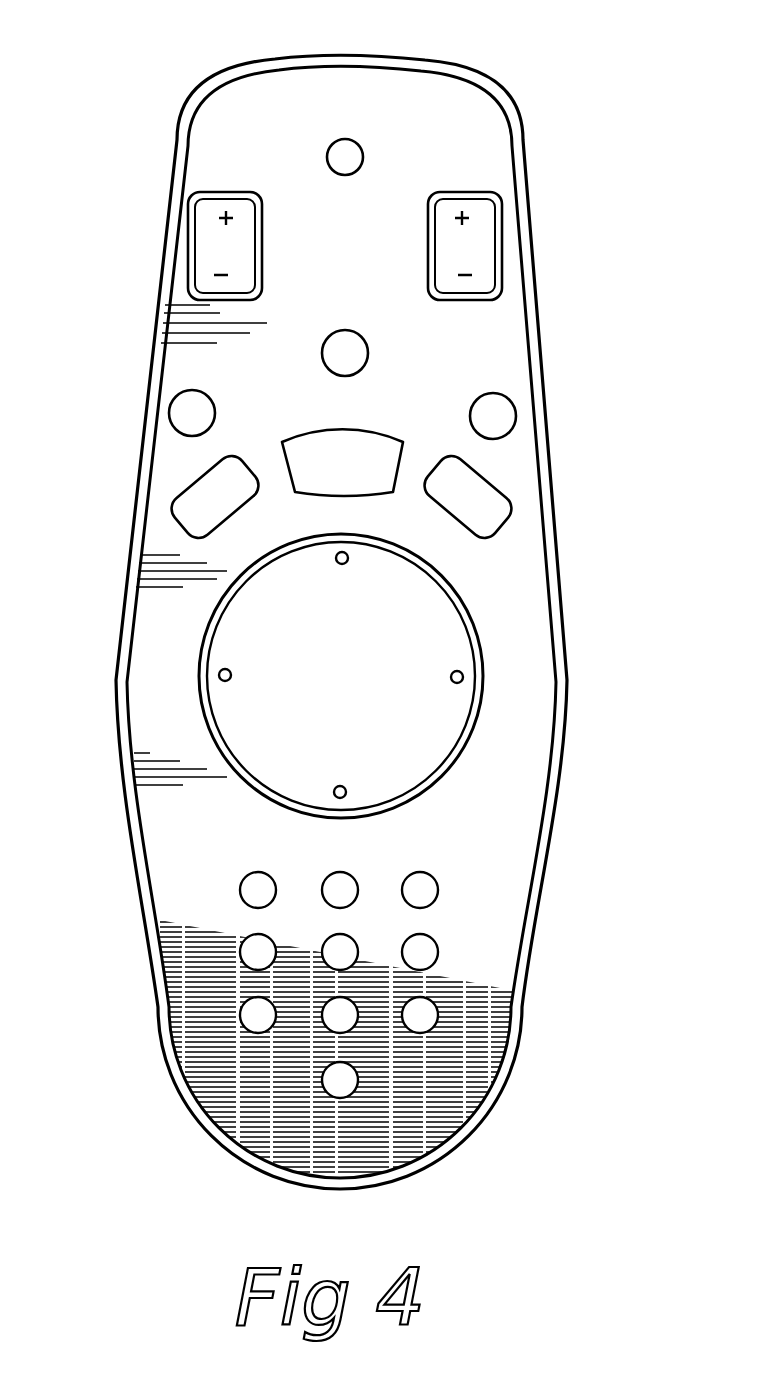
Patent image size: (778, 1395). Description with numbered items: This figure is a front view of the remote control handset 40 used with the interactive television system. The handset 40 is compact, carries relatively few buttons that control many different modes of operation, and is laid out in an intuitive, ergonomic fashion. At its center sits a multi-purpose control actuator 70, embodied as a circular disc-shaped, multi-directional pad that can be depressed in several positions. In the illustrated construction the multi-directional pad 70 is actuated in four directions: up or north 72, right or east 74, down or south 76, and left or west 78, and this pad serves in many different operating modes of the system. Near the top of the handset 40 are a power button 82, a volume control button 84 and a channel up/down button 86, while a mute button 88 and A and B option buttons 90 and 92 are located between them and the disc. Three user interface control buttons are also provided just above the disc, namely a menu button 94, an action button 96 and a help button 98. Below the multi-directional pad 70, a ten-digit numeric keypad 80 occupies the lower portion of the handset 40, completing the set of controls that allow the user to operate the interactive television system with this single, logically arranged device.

The remote control handset 40 is at (615, 82).
The multi-purpose control actuator 70 is at (465, 752).
The up or north position 72 is at (360, 558).
The right or east position 74 is at (452, 642).
The down or south position 76 is at (318, 783).
The left or west position 78 is at (218, 652).
The numeric keypad 80 is at (480, 965).
The power button 82 is at (352, 152).
The volume control button 84 is at (195, 248).
The channel up/down button 86 is at (493, 240).
The mute button 88 is at (185, 395).
The A option button 90 is at (330, 343).
The B option button 92 is at (497, 392).
The menu button 94 is at (170, 507).
The action button 96 is at (300, 437).
The help button 98 is at (511, 511).